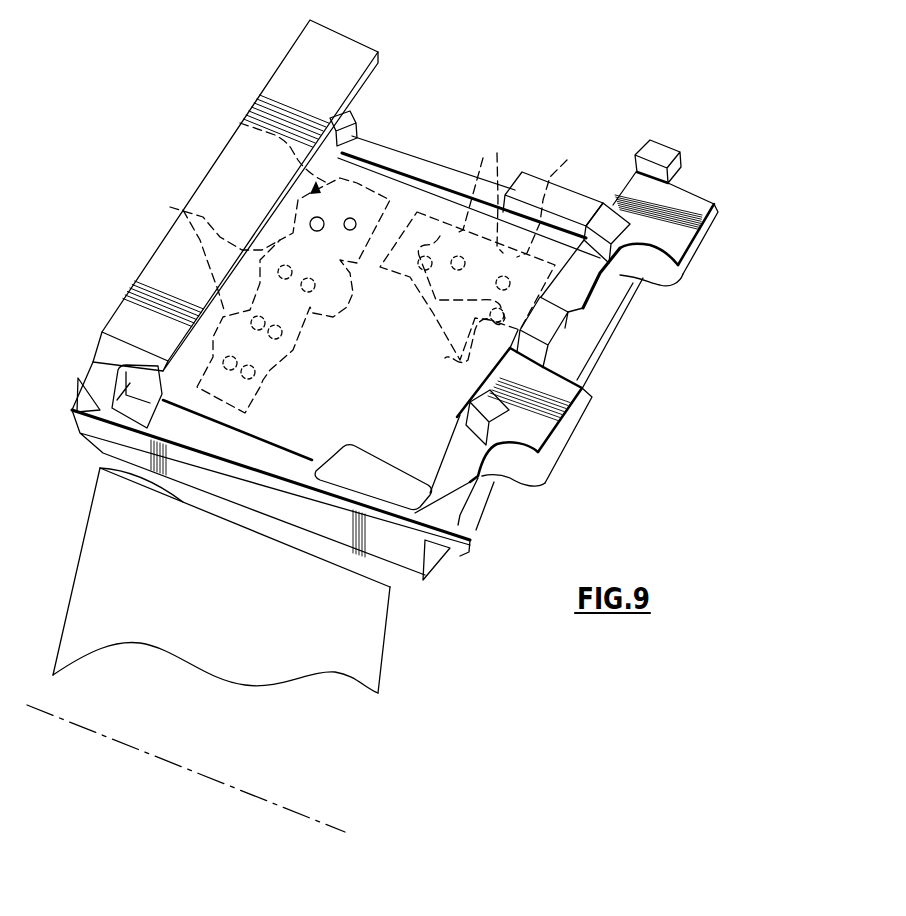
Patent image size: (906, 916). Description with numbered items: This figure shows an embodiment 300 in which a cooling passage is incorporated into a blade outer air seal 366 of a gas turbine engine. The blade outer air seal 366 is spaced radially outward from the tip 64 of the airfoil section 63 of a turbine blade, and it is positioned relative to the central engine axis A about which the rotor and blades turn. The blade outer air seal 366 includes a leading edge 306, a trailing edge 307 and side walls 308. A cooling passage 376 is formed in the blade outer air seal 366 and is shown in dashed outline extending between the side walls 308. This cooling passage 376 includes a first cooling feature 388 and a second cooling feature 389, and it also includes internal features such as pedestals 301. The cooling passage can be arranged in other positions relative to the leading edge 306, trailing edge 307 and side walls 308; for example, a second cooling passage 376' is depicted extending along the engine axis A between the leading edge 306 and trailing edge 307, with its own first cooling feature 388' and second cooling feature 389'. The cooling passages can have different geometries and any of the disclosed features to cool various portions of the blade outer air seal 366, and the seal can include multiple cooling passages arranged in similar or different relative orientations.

The embodiment 300 is at (723, 86).
The pedestals 301 is at (355, 218).
The leading edge 306 is at (137, 277).
The trailing edge 307 is at (597, 366).
The side walls 308 is at (459, 168).
The blade outer air seal 366 is at (704, 186).
The cooling passage 376 is at (285, 260).
The cooling passage 376' is at (500, 253).
The first cooling feature 388 is at (201, 252).
The first cooling feature 388' is at (495, 383).
The second cooling feature 389 is at (315, 322).
The second cooling feature 389' is at (511, 194).
The airfoil section 63 is at (383, 662).
The tip 64 is at (100, 468).
The central axis A is at (290, 808).